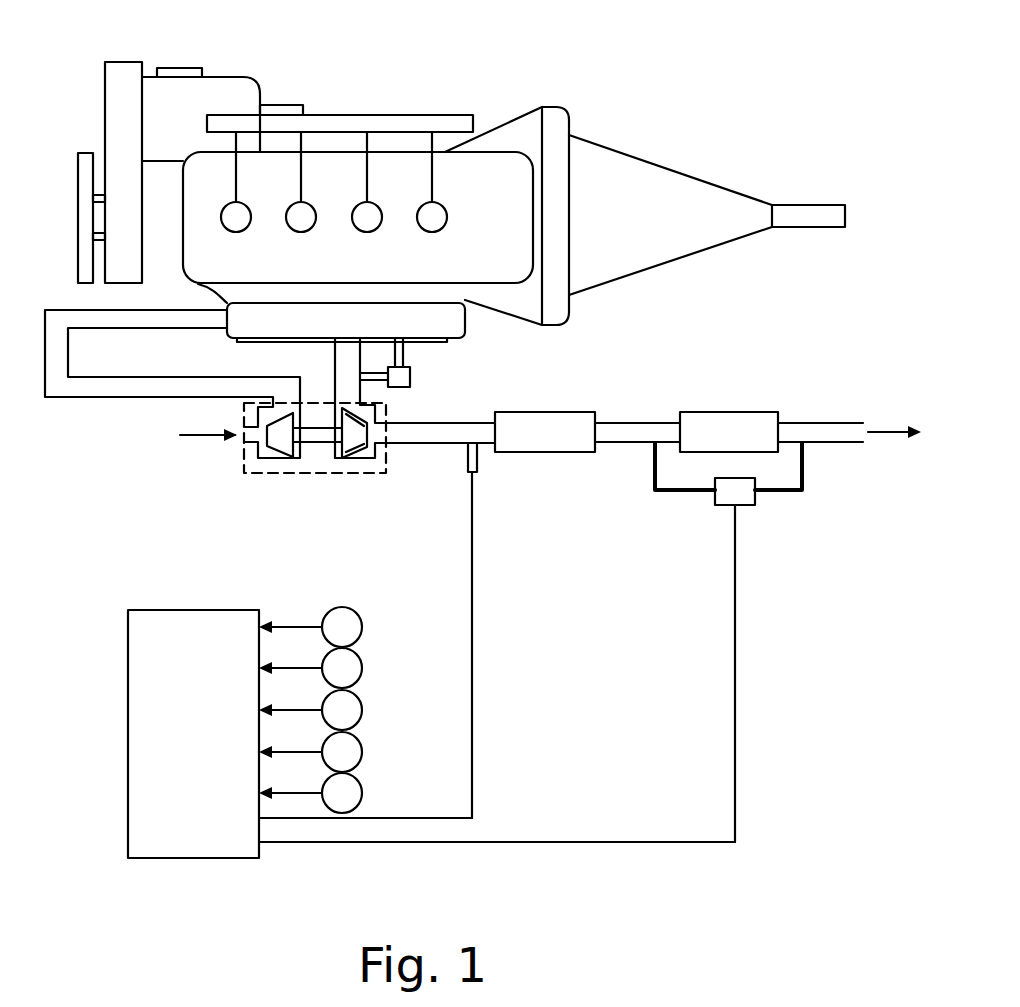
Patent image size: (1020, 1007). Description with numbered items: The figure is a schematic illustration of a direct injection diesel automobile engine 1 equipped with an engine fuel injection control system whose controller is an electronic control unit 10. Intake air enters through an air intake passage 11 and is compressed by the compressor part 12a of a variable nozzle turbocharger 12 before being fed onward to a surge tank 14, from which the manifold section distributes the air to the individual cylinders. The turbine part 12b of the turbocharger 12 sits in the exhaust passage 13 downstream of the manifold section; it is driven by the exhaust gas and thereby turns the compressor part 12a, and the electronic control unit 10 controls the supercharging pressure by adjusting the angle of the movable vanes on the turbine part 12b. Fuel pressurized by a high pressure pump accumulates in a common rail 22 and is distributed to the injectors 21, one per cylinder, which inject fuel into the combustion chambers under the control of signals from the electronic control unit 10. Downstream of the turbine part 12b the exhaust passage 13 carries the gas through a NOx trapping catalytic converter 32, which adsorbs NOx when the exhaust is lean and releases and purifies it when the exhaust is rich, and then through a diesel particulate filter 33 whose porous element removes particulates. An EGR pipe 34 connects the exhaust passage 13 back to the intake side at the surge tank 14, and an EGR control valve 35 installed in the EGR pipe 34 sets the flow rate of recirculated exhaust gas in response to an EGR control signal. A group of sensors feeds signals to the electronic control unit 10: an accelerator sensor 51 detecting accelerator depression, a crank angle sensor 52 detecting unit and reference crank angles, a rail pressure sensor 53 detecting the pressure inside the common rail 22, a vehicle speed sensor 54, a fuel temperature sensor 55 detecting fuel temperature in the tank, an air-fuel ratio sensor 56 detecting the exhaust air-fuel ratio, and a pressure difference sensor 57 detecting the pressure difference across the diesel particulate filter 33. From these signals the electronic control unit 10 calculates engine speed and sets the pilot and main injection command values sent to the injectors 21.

The diesel automobile engine 1 is at (501, 85).
The electronic control unit 10 is at (190, 610).
The air intake passage 11 is at (62, 310).
The variable nozzle turbocharger 12 is at (318, 461).
The compressor part 12a is at (276, 460).
The turbine part 12b is at (356, 460).
The exhaust passage 13 is at (335, 365).
The surge tank 14 is at (468, 316).
The fuel injection nozzles or injectors 21 is at (247, 228).
The common rail 22 is at (402, 114).
The NOx trapping catalytic converter 32 is at (517, 412).
The diesel particulate filter 33 is at (712, 412).
The EGR pipe 34 is at (404, 355).
The EGR control valve 35 is at (410, 381).
The accelerator sensor 51 is at (362, 631).
The crank angle sensor 52 is at (362, 672).
The rail pressure sensor 53 is at (362, 714).
The vehicle speed sensor 54 is at (362, 756).
The fuel temperature sensor 55 is at (362, 797).
The air-fuel ratio sensor 56 is at (477, 458).
The pressure difference sensor 57 is at (748, 505).